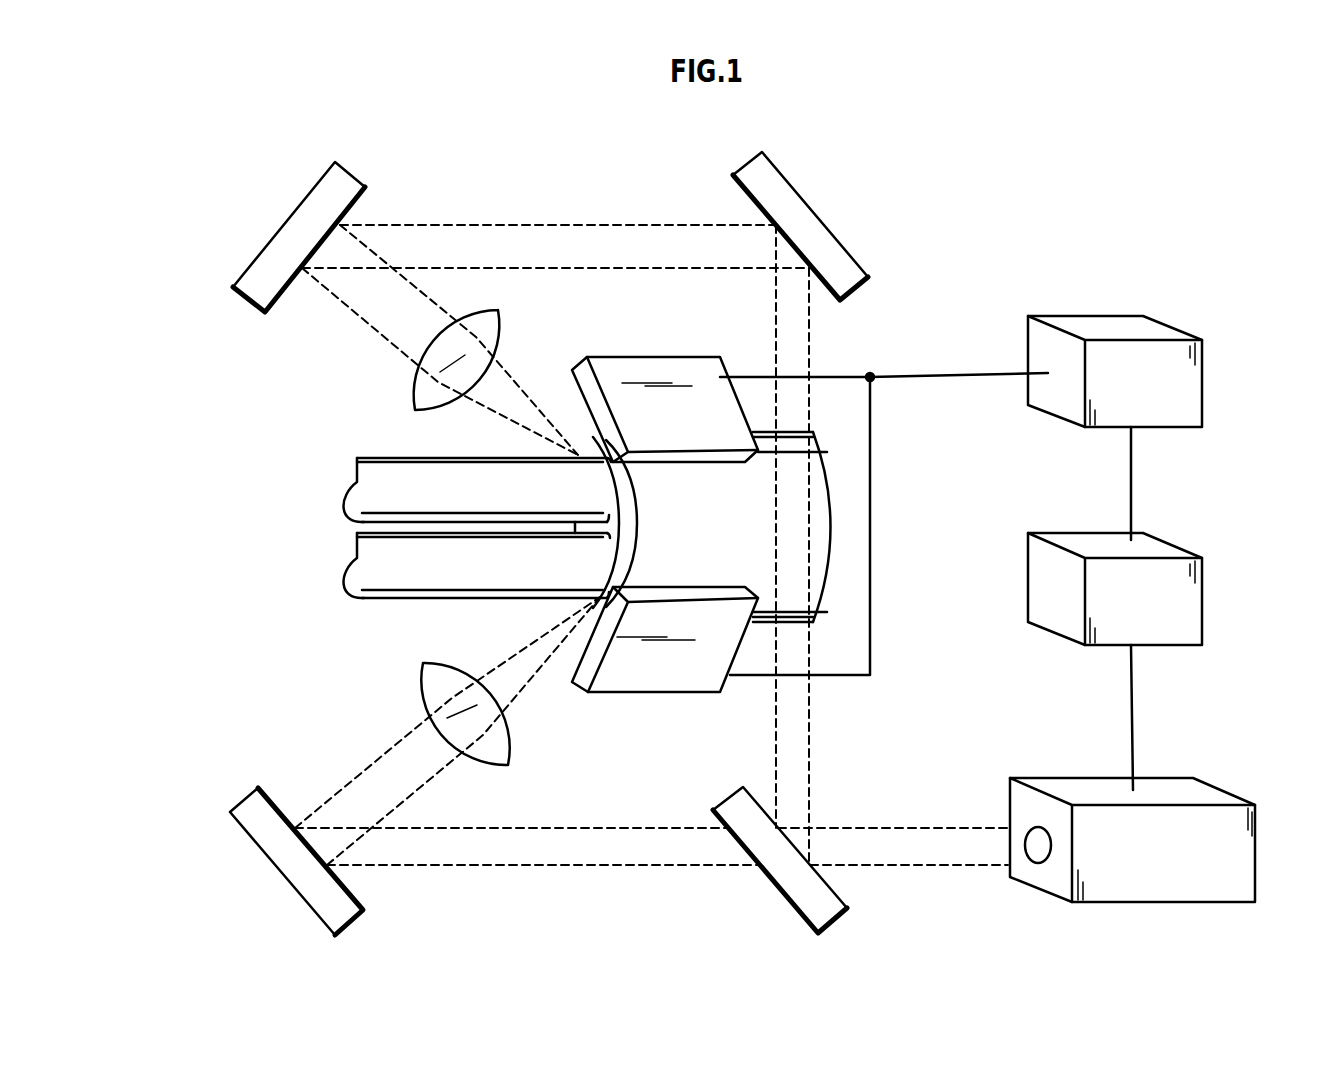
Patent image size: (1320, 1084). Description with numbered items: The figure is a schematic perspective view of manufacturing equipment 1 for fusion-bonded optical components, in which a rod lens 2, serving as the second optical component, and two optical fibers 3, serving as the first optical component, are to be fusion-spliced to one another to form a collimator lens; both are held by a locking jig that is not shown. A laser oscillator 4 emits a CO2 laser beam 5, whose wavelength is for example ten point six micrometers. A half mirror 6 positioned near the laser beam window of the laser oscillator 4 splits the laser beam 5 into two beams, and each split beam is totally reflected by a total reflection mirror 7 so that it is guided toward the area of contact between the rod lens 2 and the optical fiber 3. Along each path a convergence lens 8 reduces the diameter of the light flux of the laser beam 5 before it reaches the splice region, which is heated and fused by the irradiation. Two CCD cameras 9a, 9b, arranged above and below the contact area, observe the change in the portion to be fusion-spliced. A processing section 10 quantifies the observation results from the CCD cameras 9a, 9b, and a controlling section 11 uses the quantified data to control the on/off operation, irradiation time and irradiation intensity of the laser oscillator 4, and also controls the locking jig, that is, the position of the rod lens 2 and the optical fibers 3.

The manufacturing equipment 1 is at (285, 155).
The rod lens 2 is at (818, 508).
The optical fiber 3 is at (410, 457).
The laser oscillator 4 is at (1172, 778).
The laser beam 5 is at (534, 230).
The half mirror 6 is at (837, 892).
The total reflection mirror 7 is at (257, 258).
The convergence lens 8 is at (420, 389).
The CCD camera 9a is at (603, 357).
The CCD camera 9b is at (600, 695).
The processing section 10 is at (1115, 317).
The controlling section 11 is at (1168, 543).